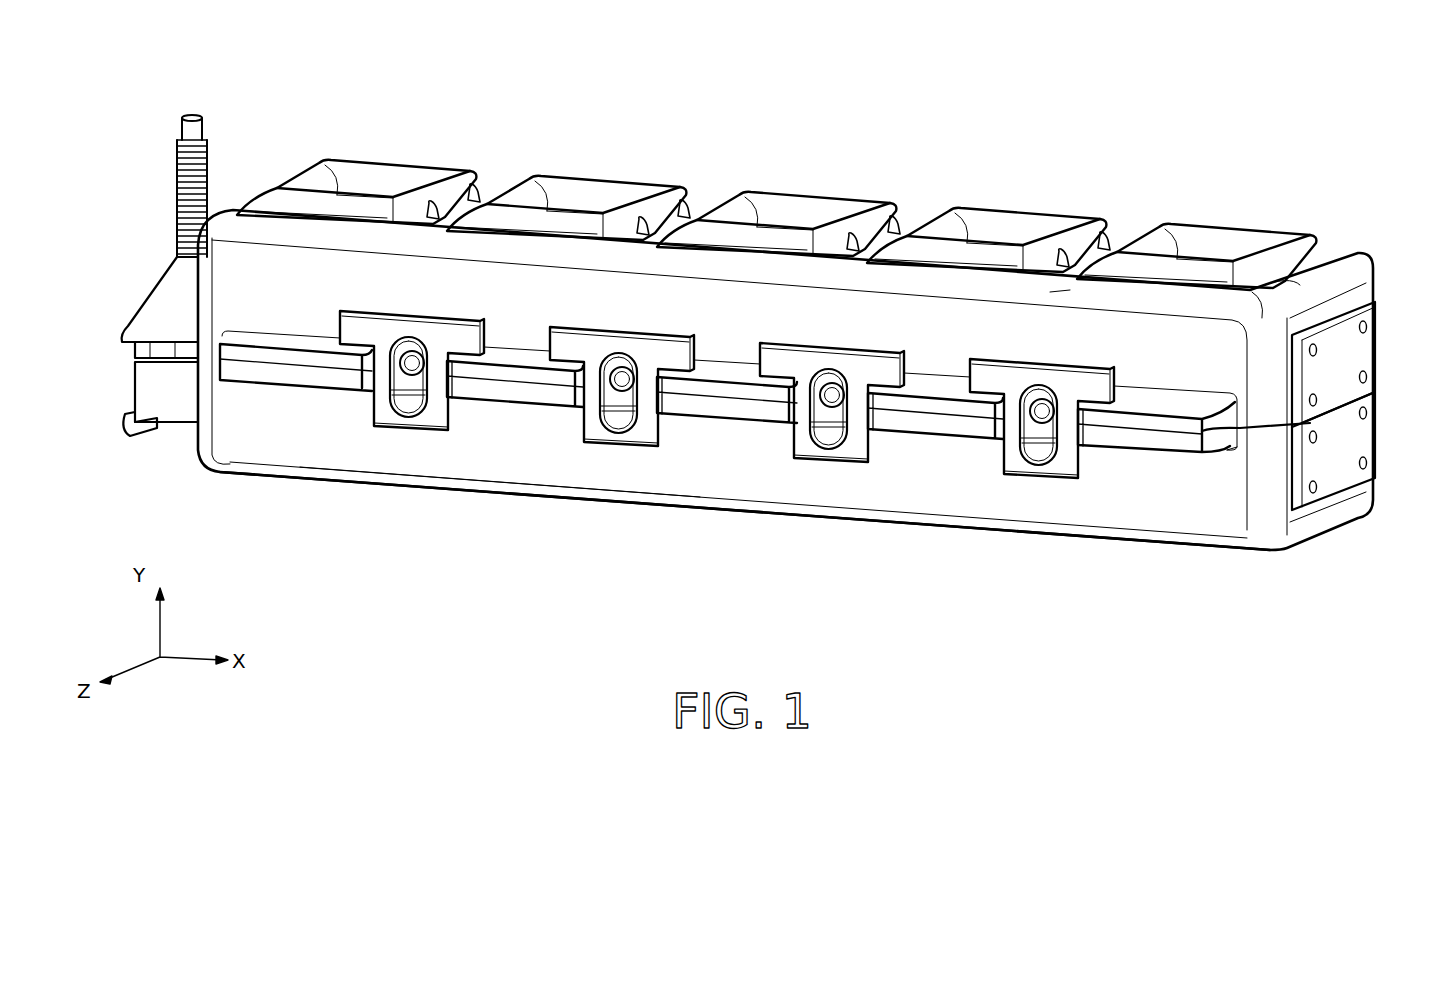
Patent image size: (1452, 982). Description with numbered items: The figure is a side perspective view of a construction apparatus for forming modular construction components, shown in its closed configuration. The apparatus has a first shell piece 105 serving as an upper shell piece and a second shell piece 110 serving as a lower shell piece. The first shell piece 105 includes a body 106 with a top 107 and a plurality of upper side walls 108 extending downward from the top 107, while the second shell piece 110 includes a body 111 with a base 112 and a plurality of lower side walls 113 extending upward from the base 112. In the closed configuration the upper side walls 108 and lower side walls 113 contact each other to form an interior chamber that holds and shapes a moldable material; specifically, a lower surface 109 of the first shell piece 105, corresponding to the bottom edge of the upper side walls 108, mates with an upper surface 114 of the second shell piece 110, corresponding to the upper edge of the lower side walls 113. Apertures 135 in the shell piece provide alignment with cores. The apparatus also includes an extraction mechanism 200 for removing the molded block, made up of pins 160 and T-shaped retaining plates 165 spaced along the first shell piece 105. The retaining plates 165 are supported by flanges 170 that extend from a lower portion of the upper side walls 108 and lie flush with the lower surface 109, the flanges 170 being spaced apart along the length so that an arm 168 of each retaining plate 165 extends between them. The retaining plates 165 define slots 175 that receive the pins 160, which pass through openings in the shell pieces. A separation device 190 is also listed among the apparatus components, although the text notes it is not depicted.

The body 106 is at (863, 182).
The first shell piece 105 is at (1068, 288).
The top 107 is at (657, 223).
The upper side walls 108 is at (1196, 343).
The lower surface 109 is at (205, 334).
The second shell piece 110 is at (367, 453).
The body 111 is at (657, 533).
The base 112 is at (495, 487).
The lower side walls 113 is at (1352, 432).
The upper surface 114 is at (308, 362).
The apertures 135 is at (378, 180).
The pins 160 is at (837, 397).
The retaining plates 165 is at (878, 372).
The arm 168 is at (458, 322).
The flanges 170 is at (702, 390).
The slots 175 is at (823, 377).
The separation device 190 is at (175, 169).
The extraction mechanism 200 is at (1063, 455).